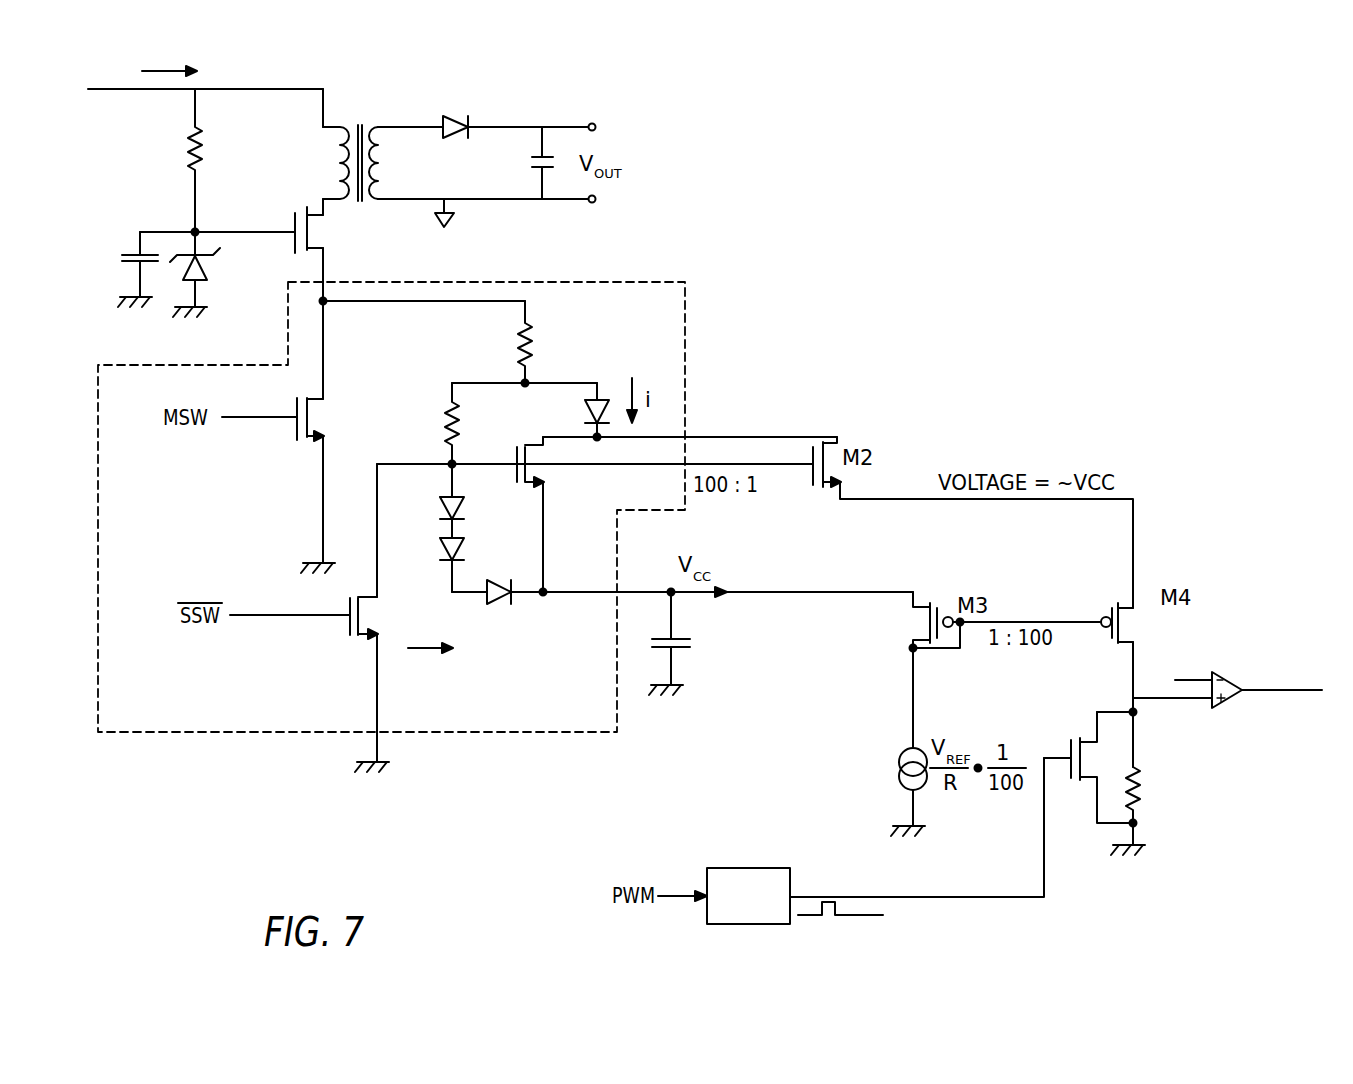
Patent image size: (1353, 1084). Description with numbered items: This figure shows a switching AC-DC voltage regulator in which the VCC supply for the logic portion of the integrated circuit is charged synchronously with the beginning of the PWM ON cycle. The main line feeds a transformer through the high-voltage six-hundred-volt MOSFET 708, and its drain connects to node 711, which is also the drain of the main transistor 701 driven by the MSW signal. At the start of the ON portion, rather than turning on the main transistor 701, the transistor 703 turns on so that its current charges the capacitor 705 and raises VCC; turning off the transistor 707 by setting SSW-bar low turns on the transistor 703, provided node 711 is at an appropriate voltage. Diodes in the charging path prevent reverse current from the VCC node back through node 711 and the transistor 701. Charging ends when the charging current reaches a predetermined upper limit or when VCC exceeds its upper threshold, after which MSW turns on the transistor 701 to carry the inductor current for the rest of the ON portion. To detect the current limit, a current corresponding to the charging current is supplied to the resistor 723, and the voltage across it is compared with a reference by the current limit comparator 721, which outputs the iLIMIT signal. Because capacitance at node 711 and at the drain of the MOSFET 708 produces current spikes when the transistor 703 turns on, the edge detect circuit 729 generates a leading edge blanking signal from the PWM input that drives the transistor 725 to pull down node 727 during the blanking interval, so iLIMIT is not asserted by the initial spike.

The 600V MOSFET 708 is at (279, 213).
The node 711 is at (325, 303).
The main transistor 701 is at (316, 410).
The transistor 703 is at (541, 470).
The transistor 707 is at (370, 610).
The capacitor 705 is at (700, 646).
The current limit comparator 721 is at (1236, 697).
The resistor 723 is at (1156, 804).
The transistor 725 is at (1079, 790).
The node 727 is at (1135, 714).
The edge detect circuit 729 is at (748, 868).